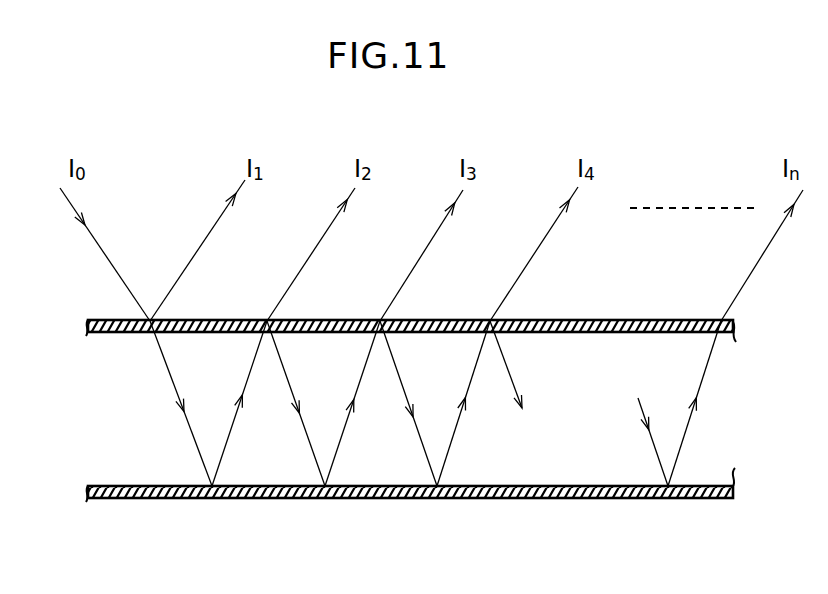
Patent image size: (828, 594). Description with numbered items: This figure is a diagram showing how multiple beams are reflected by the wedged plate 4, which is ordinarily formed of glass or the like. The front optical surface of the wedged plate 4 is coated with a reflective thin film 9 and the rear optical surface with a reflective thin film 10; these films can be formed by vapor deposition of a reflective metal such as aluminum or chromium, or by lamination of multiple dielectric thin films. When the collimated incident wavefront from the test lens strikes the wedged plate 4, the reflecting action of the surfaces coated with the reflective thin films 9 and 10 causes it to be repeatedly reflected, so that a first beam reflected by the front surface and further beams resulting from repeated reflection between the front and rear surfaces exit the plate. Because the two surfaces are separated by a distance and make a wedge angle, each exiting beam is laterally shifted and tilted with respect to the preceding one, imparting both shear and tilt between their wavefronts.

The reflective thin film 9 is at (105, 321).
The reflective thin film 10 is at (493, 498).
The wedged plate 4 is at (252, 472).